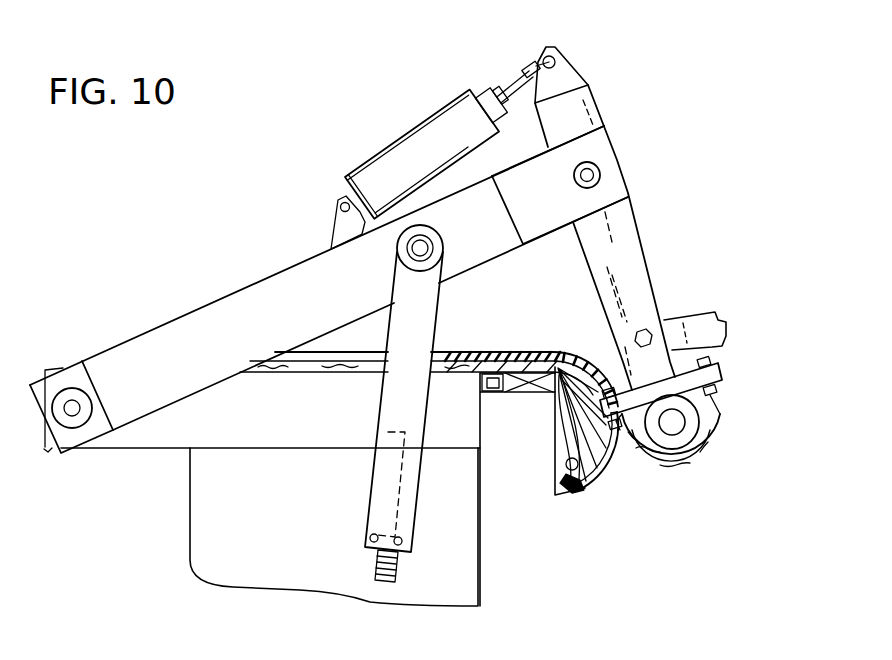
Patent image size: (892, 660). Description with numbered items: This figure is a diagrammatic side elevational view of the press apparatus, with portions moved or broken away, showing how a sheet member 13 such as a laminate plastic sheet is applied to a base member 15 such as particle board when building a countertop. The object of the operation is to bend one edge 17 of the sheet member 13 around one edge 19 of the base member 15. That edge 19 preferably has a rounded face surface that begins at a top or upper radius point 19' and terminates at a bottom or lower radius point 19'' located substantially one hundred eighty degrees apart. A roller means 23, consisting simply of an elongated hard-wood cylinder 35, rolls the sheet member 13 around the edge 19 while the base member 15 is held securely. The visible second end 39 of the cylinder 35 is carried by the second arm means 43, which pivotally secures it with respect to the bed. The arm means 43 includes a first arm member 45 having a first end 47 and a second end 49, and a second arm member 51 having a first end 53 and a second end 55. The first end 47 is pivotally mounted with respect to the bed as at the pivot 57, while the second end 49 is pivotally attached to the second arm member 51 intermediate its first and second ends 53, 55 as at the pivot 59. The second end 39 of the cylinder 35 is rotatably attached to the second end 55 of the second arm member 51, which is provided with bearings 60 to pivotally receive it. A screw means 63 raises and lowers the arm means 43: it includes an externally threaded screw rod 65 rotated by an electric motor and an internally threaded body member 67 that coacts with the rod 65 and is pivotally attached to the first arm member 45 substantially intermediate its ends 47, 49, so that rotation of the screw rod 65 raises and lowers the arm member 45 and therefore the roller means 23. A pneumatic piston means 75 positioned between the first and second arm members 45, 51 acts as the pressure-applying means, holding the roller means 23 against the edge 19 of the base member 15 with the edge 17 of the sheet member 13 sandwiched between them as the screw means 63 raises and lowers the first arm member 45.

The sheet member 13 is at (500, 352).
The base member 15 is at (558, 420).
The edge of the sheet member 17 is at (615, 460).
The edge of the base member 19 is at (573, 456).
The upper radius point 19' is at (548, 426).
The lower radius point 19'' is at (536, 438).
The roller means 23 is at (697, 472).
The elongated cylinder 35 is at (712, 440).
The second end of the cylinder 39 is at (672, 422).
The second arm means 43 is at (270, 192).
The first arm member 45 is at (275, 292).
The first end of the first arm member 47 is at (138, 362).
The second end of the first arm member 49 is at (612, 193).
The second arm member 51 is at (632, 258).
The first end of the second arm member 53 is at (597, 100).
The second end of the second arm member 55 is at (672, 360).
The pivot 57 is at (72, 408).
The pivot 59 is at (600, 170).
The bearings 60 is at (687, 408).
The screw means 63 is at (352, 560).
The externally threaded screw rod 65 is at (368, 598).
The internally threaded body member 67 is at (418, 528).
The pneumatic piston means 75 is at (425, 105).